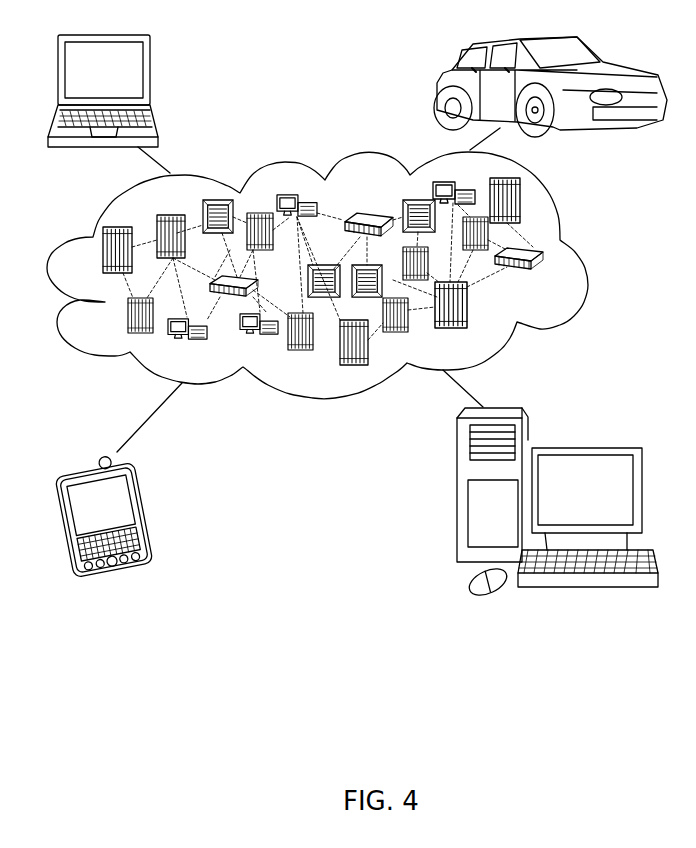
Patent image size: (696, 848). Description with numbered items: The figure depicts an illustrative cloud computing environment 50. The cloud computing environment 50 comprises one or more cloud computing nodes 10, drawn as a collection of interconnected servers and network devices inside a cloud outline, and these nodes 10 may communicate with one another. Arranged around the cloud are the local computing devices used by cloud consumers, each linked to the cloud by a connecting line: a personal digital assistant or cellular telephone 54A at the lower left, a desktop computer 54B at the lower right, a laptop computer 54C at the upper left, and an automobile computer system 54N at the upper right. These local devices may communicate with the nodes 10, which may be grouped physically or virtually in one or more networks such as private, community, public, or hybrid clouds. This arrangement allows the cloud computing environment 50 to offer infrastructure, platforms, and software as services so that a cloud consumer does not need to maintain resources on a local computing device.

The cloud computing nodes 10 is at (550, 277).
The cloud computing environment 50 is at (586, 253).
The personal digital assistant or cellular telephone 54A is at (143, 507).
The desktop computer 54B is at (586, 448).
The laptop computer 54C is at (150, 79).
The automobile computer system 54N is at (441, 91).